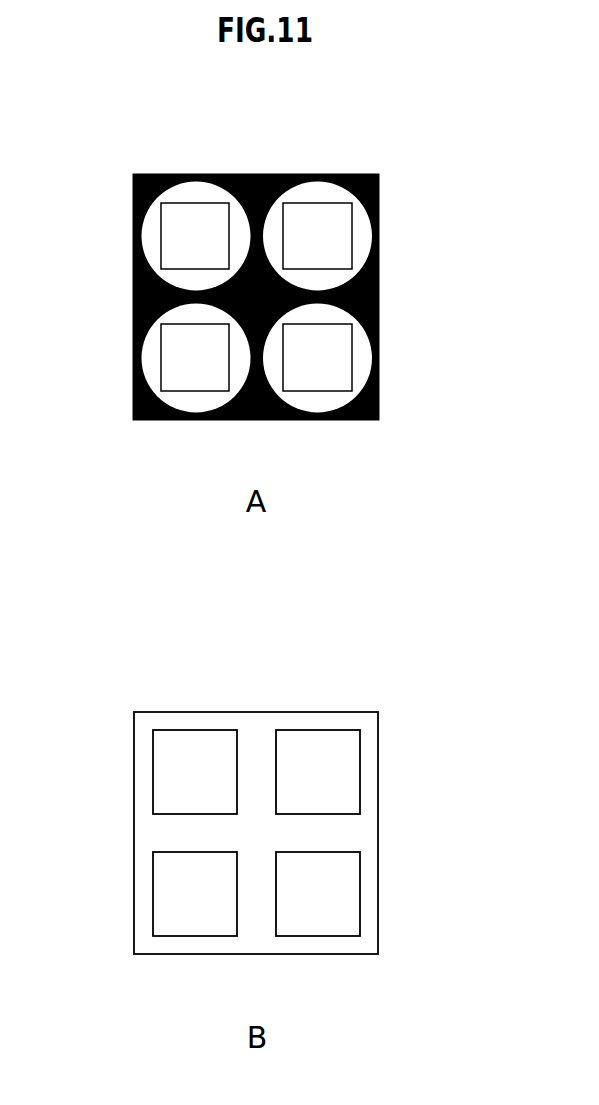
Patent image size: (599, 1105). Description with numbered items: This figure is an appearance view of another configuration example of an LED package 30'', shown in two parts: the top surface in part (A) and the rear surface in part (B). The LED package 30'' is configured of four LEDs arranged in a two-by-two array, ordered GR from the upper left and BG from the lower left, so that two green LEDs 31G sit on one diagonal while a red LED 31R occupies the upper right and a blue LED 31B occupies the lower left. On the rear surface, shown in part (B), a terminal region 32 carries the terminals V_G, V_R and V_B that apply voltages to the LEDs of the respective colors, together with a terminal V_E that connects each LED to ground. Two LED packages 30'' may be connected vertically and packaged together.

The LED package 30'' is at (256, 806).
The green photodiode / color filter region 31G is at (150, 235).
The red photodiode / color filter region 31R is at (366, 236).
The blue photodiode / color filter region 31B is at (150, 357).
The output voltage region 32 is at (360, 771).